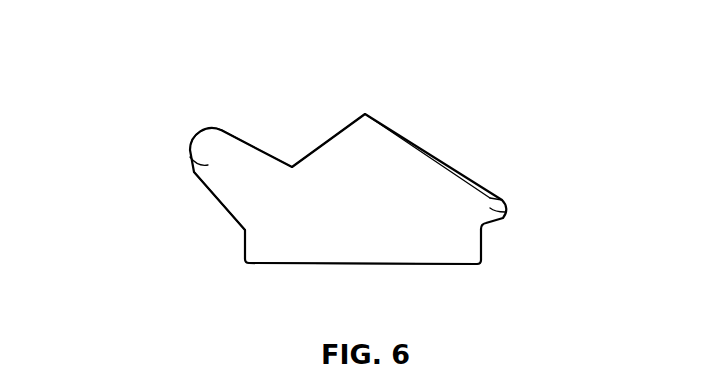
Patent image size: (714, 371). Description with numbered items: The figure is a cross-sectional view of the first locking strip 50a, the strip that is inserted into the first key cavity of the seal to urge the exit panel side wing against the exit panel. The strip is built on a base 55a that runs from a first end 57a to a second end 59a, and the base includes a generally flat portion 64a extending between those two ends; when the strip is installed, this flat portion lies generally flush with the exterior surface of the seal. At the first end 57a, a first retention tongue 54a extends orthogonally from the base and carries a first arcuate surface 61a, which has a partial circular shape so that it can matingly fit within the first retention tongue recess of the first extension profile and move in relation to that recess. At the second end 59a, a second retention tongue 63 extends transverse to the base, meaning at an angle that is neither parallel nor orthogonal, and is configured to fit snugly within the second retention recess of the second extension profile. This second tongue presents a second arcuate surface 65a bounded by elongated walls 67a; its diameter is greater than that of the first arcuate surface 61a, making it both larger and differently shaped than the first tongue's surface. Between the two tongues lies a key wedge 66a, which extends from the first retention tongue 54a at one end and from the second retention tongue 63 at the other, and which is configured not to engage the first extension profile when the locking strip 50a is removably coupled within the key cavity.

The first locking strip 50a is at (371, 214).
The first retention tongue 54a is at (503, 218).
The base 55a is at (392, 247).
The first end 57a is at (485, 257).
The second end 59a is at (238, 253).
The first arcuate surface 61a is at (502, 202).
The second retention tongue 63 is at (190, 157).
The flat portion 64a is at (303, 265).
The second arcuate surface 65a is at (200, 128).
The key wedge 66a is at (365, 112).
The elongated walls 67a is at (252, 140).